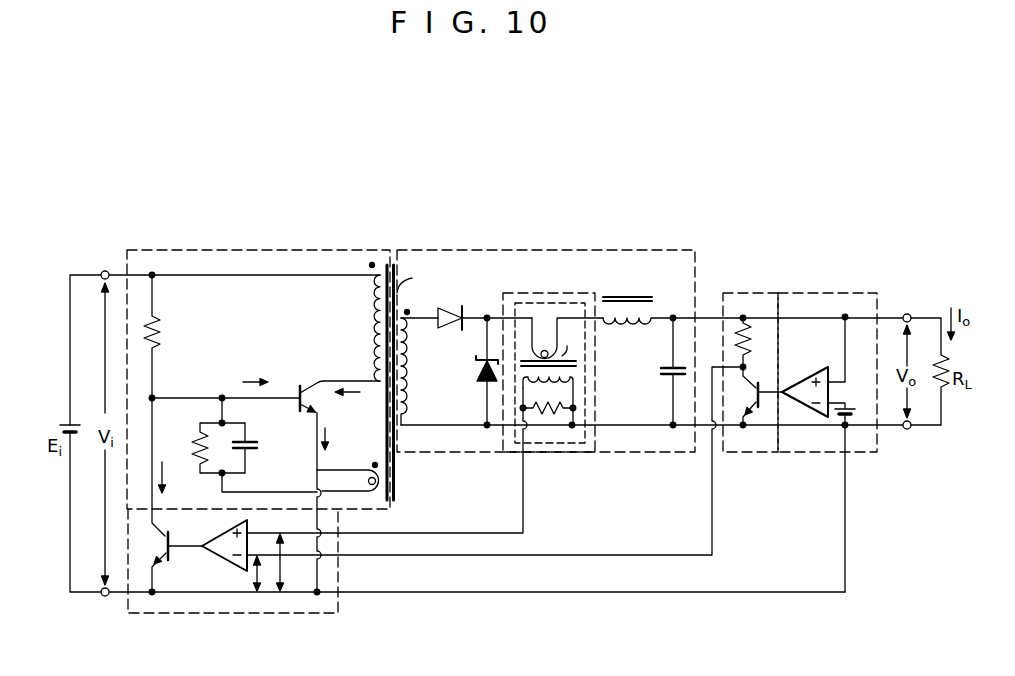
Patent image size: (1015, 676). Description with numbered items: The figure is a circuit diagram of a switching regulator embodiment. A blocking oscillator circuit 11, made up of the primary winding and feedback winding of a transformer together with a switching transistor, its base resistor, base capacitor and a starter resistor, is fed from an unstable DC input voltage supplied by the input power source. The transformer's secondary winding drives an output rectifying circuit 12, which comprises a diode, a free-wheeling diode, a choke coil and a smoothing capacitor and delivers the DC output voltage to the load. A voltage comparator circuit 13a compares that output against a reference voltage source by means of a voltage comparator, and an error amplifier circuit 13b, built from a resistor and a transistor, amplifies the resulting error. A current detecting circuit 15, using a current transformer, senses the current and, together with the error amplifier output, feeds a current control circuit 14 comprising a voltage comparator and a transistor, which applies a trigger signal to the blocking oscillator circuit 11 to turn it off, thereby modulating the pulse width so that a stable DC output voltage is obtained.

The blocking oscillator circuit 11 is at (263, 251).
The output rectifying circuit 12 is at (529, 250).
The voltage comparator circuit 13a is at (822, 293).
The error amplifier circuit 13b is at (744, 293).
The current control circuit 14 is at (225, 613).
The current detecting circuit 15 is at (535, 444).